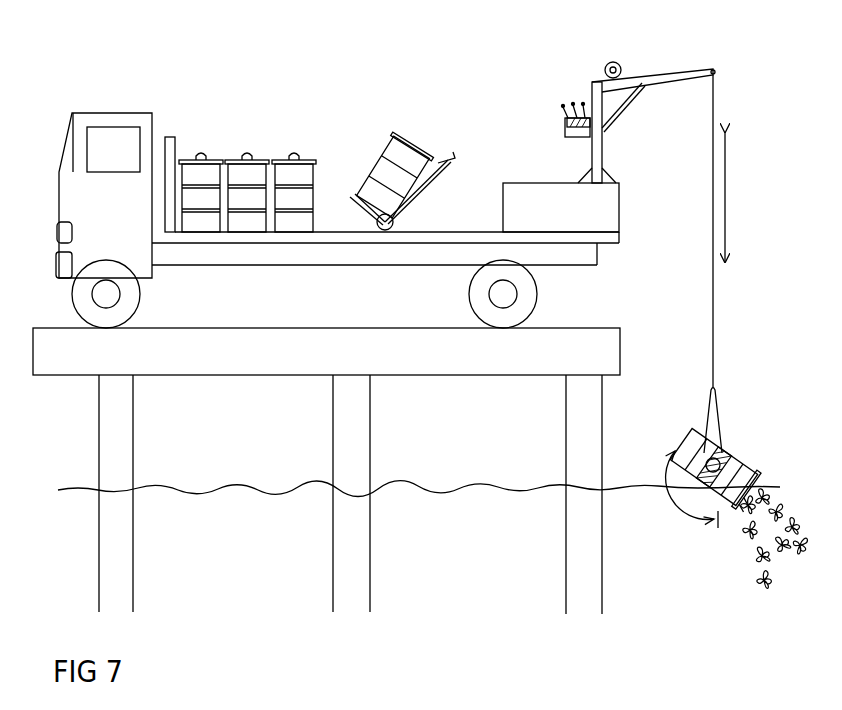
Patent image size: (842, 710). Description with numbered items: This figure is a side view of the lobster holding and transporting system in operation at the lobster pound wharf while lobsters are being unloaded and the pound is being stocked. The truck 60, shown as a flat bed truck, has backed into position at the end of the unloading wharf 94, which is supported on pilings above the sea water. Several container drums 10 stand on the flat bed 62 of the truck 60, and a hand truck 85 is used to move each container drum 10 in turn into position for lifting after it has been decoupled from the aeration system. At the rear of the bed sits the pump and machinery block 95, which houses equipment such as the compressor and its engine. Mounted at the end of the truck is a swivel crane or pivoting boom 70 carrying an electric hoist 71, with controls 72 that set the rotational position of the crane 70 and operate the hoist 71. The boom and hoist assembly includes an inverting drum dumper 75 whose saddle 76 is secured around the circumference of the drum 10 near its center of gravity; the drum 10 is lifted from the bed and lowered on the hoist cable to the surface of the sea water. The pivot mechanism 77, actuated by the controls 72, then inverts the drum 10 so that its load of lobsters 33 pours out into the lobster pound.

The container drum 10 is at (377, 163).
The lobsters 33 is at (772, 506).
The truck 60 is at (311, 272).
The flat bed 62 is at (616, 236).
The swivel crane or pivoting boom 70 is at (596, 86).
The electric hoist 71 is at (620, 64).
The controls 72 is at (565, 132).
The inverting drum dumper 75 is at (722, 406).
The saddle 76 is at (673, 489).
The pivot mechanism 77 is at (708, 496).
The hand truck 85 is at (449, 158).
The unloading wharf 94 is at (449, 354).
The pump and machinery block 95 is at (620, 204).